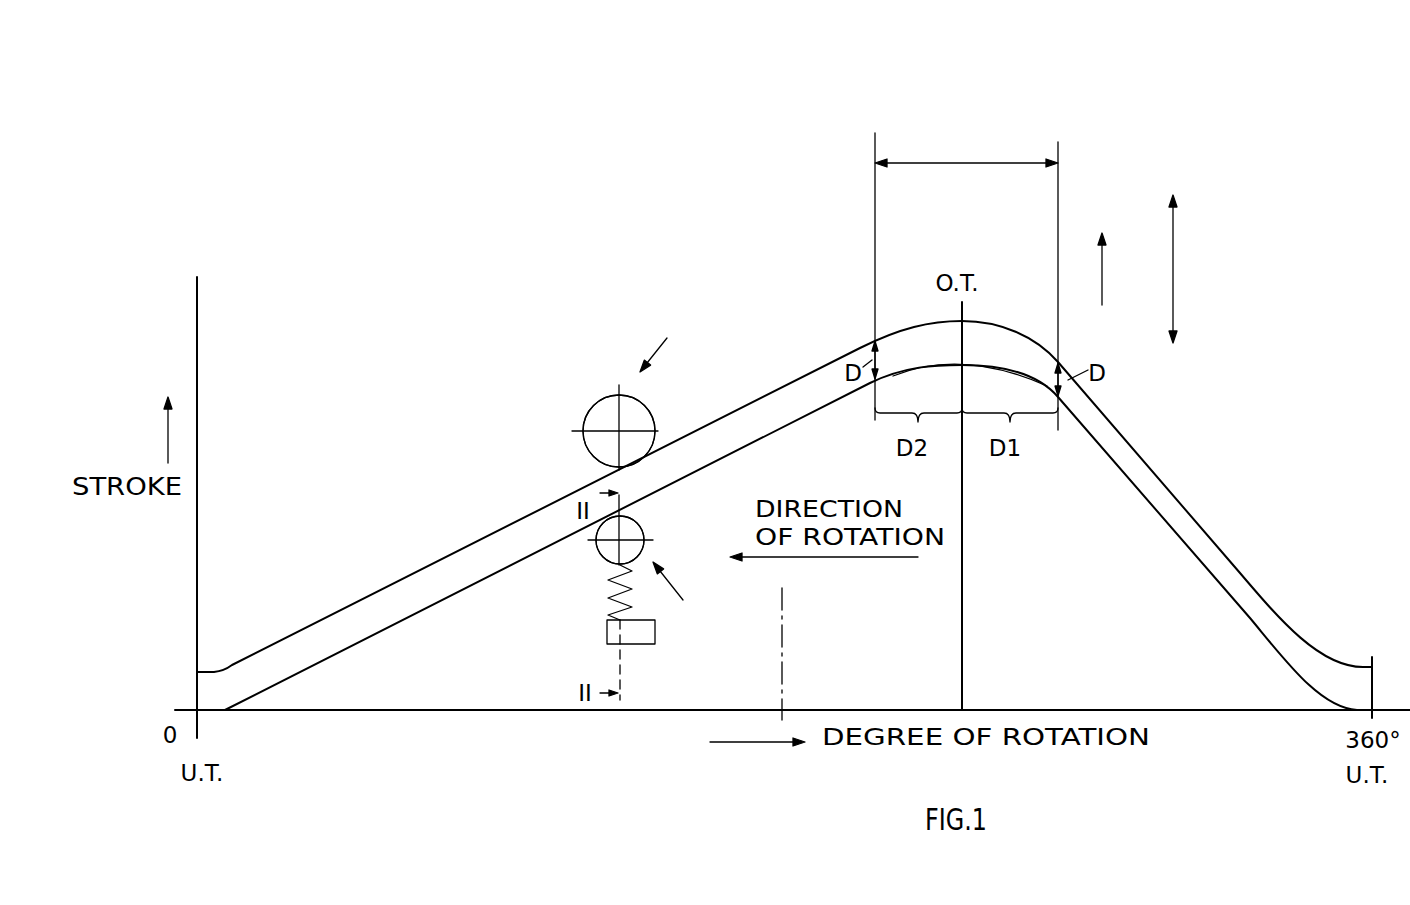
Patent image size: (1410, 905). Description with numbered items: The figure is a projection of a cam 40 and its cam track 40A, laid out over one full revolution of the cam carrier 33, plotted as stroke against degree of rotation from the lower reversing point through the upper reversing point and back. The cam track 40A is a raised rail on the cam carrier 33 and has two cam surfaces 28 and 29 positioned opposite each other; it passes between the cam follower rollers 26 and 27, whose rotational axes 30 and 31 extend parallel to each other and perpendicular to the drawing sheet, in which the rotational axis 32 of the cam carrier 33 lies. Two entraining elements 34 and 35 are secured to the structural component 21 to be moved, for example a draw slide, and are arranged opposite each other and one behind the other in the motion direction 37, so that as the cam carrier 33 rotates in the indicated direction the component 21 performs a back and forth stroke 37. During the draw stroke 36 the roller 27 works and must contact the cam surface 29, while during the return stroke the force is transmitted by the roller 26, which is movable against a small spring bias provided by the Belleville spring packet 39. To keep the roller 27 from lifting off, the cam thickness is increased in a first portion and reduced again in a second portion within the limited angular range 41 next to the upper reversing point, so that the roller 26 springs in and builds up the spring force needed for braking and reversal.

The structural component 21 is at (637, 630).
The cam follower roller 26 is at (645, 535).
The cam follower roller 27 is at (628, 422).
The cam surface 28 is at (482, 580).
The cam surface 29 is at (463, 550).
The rotational axis 30 is at (607, 558).
The rotational axis 31 is at (617, 428).
The rotational axis 32 is at (785, 653).
The cam carrier 33 is at (1135, 628).
The entraining element 34 is at (667, 339).
The entraining element 35 is at (682, 595).
The draw stroke 36 is at (1102, 285).
The motion direction 37 is at (1173, 275).
The Belleville spring packet 39 is at (608, 597).
The cam 40 is at (1215, 467).
The cam track 40A is at (1232, 578).
The angular range 41 is at (958, 163).